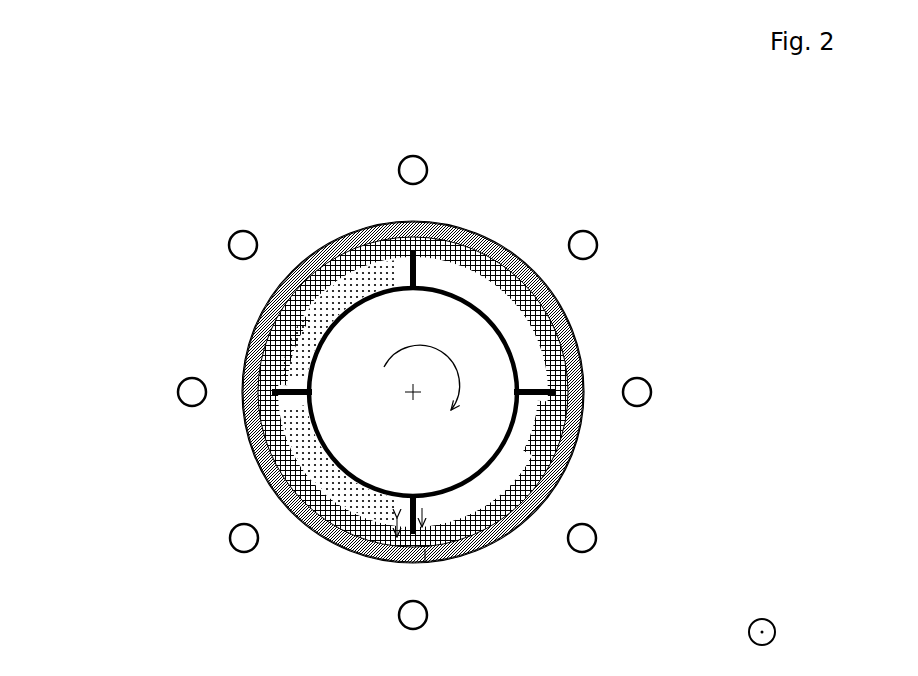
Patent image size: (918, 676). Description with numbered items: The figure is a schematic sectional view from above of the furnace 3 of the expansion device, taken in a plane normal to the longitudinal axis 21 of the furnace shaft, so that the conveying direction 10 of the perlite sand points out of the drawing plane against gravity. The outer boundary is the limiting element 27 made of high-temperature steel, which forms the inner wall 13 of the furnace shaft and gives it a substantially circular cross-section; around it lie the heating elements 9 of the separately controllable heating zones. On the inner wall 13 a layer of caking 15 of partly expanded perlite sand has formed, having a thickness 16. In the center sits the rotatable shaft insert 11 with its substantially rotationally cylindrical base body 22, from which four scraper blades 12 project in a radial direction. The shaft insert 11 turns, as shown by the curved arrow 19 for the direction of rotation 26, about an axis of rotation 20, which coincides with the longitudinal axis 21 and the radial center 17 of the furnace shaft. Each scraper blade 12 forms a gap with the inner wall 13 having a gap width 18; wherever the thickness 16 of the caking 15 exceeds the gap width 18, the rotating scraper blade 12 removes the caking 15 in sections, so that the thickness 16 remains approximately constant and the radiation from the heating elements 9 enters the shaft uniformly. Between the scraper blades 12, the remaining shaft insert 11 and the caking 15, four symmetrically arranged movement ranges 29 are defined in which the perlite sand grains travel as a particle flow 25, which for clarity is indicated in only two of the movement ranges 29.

The furnace 3 is at (80, 88).
The heating element 9 is at (238, 240).
The conveying direction 10 is at (775, 622).
The shaft insert 11 is at (505, 428).
The scraper blade 12 is at (392, 243).
The inner wall 13 is at (262, 352).
The caking 15 is at (445, 228).
The thickness 16 is at (398, 537).
The radial center 17 is at (637, 354).
The gap width 18 is at (426, 556).
The direction of rotation 19 is at (615, 326).
The axis of rotation 20 is at (637, 354).
The longitudinal axis 21 is at (415, 391).
The base body 22 is at (498, 411).
The particle flow 25 is at (333, 290).
The direction of rotation 26 is at (447, 358).
The limiting element 27 is at (262, 318).
The movement ranges 29 is at (483, 278).